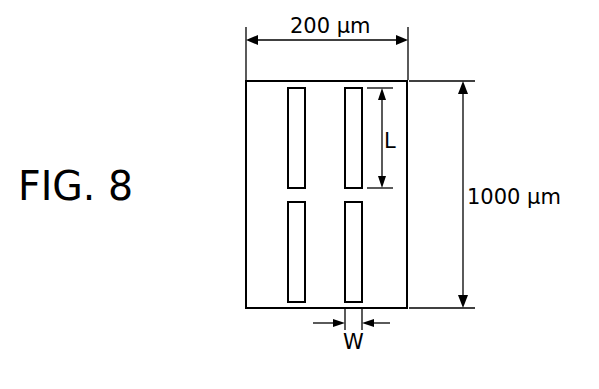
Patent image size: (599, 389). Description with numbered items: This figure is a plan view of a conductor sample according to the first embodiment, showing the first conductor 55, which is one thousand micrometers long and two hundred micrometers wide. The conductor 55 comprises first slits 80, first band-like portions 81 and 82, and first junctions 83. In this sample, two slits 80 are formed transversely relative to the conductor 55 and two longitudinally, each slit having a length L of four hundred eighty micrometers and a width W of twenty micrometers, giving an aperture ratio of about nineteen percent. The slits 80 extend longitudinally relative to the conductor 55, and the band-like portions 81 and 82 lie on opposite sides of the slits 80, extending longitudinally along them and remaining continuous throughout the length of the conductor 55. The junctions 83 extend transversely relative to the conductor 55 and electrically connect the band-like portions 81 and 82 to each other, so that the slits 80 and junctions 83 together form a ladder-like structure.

The first conductor 55 is at (246, 122).
The first slits 80 is at (343, 143).
The first band-like portion 81 is at (407, 165).
The first band-like portion 82 is at (246, 192).
The first junctions 83 is at (330, 81).